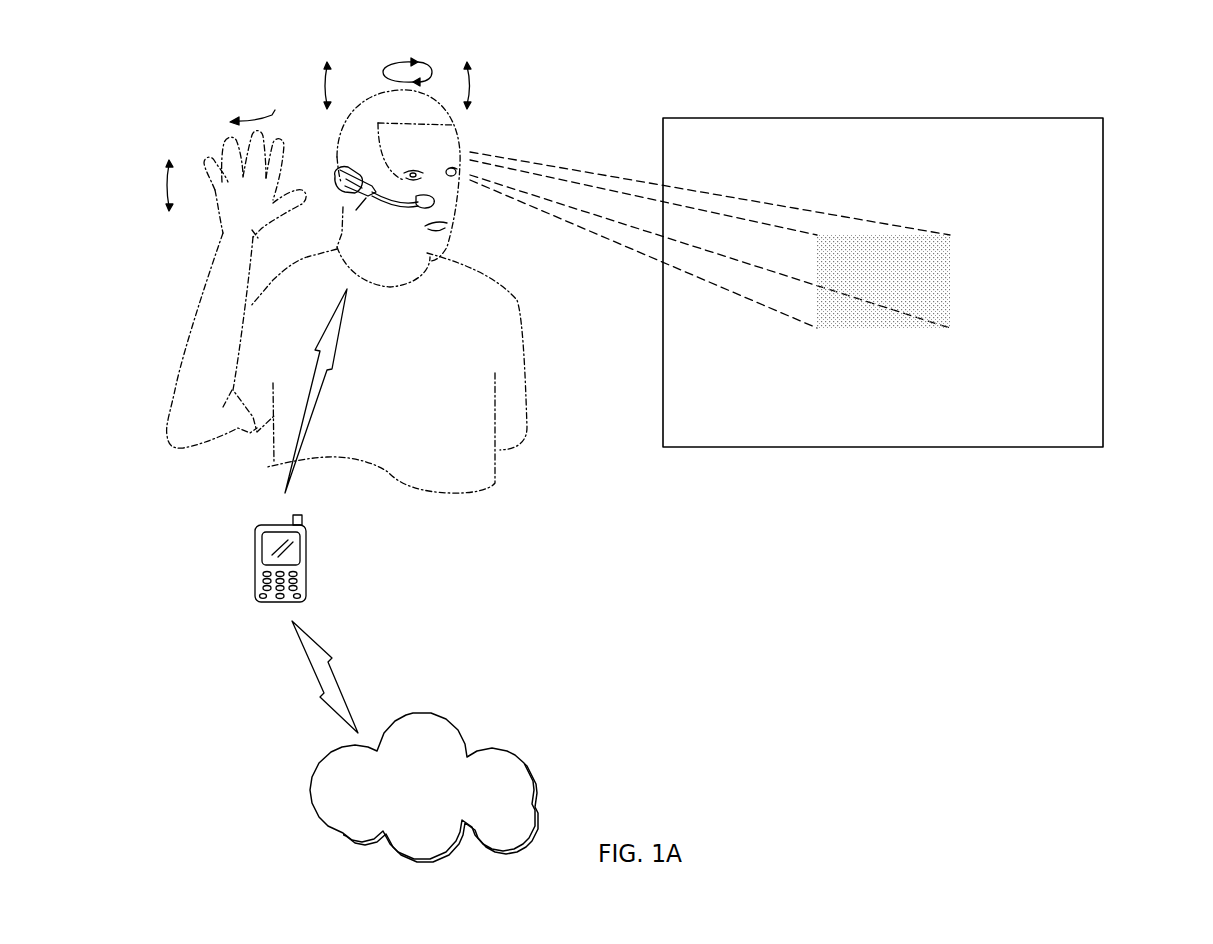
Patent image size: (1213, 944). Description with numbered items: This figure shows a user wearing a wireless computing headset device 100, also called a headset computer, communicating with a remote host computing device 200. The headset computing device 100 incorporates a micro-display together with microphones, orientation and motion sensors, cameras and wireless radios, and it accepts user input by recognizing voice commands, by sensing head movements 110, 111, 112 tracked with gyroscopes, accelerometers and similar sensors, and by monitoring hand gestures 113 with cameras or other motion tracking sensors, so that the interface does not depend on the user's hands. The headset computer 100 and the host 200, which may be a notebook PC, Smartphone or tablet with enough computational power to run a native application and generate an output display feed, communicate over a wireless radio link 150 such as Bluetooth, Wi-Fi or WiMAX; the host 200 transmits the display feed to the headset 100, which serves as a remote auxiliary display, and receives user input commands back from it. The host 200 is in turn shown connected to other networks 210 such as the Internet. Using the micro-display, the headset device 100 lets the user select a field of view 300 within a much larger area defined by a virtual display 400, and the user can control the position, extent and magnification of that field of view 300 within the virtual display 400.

The wireless computing headset device 100 is at (356, 212).
The head movement 110 is at (392, 63).
The head movement 111 is at (470, 88).
The head movement 112 is at (325, 87).
The hand gestures 113 is at (167, 186).
The wireless radio link 150 is at (303, 424).
The host computing device 200 is at (307, 555).
The other networks 210 is at (492, 745).
The field of view 300 is at (955, 270).
The virtual display 400 is at (757, 447).